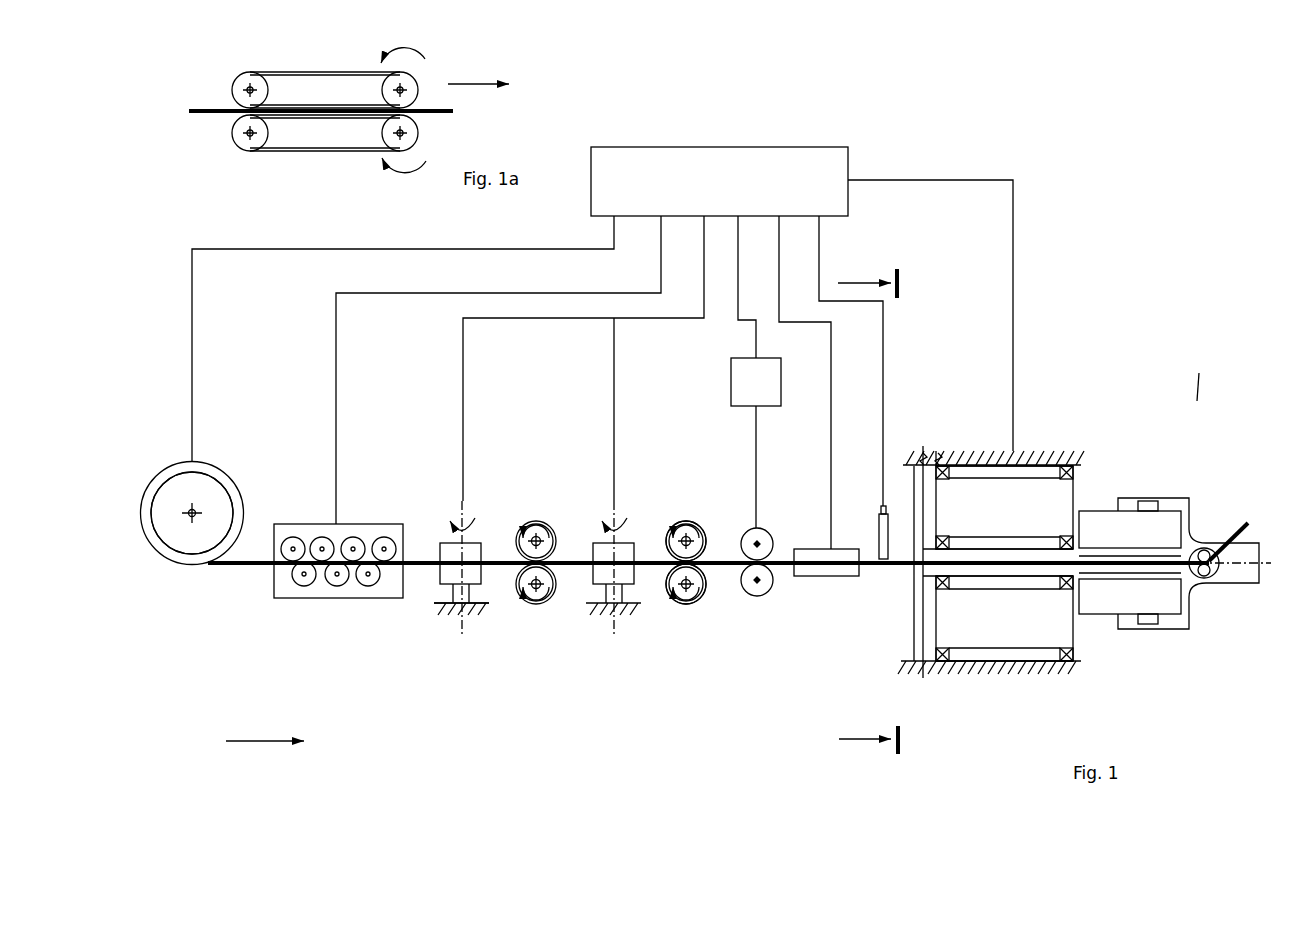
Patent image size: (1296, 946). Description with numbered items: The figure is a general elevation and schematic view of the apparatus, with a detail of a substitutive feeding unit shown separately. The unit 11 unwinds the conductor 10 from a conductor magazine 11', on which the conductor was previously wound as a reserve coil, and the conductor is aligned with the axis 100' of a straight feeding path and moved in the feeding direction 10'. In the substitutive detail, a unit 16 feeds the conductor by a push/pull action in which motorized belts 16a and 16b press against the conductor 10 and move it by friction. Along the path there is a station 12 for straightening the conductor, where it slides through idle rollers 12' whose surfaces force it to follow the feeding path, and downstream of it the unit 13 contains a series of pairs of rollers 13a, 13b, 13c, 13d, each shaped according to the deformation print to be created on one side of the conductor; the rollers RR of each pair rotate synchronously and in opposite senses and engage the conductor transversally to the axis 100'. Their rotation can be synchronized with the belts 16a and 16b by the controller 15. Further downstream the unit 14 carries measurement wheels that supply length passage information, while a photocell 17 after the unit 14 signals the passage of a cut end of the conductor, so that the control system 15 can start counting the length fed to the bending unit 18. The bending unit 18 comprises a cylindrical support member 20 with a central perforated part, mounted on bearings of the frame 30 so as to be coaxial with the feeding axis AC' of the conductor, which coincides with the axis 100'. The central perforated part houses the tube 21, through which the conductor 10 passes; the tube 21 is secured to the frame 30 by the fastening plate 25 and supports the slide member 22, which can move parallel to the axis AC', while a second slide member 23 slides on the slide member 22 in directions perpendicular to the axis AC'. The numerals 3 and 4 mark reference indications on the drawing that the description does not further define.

In FIG. 1, the winding station 3 is at (1167, 424).
In FIG. 1, the section line 4 is at (865, 283).
In FIG. 1A, the conductor 10 is at (320, 150).
In FIG. 1, the conductor 10 is at (728, 548).
In FIG. 1A, the feeding direction 10' is at (478, 61).
In FIG. 1, the feeding direction 10' is at (265, 719).
In FIG. 1, the axis of the feeding path 100' is at (423, 506).
In FIG. 1, the unwinding unit 11 is at (192, 468).
In FIG. 1, the conductor magazine 11' is at (209, 491).
In FIG. 1, the straightening station 12 is at (338, 616).
In FIG. 1, the idle rollers 12' is at (335, 601).
In FIG. 1, the roller unit 13 is at (544, 498).
In FIG. 1, the roller pair 13a is at (473, 577).
In FIG. 1, the roller pair 13b is at (535, 598).
In FIG. 1, the roller pair 13c is at (622, 573).
In FIG. 1, the roller pair 13d is at (704, 625).
In FIG. 1, the rotating rollers RR is at (685, 530).
In FIG. 1, the measurement unit 14 is at (769, 491).
In FIG. 1, the controller 15 is at (668, 158).
In FIG. 1, the feeding unit 16 is at (823, 615).
In FIG. 1A, the motorized belt 16a is at (322, 73).
In FIG. 1A, the motorized belt 16b is at (327, 148).
In FIG. 1, the photocell 17 is at (882, 523).
In FIG. 1, the bending unit 18 is at (1039, 435).
In FIG. 1, the support member 20 is at (1080, 480).
In FIG. 1, the tube 21 is at (982, 553).
In FIG. 1, the slide member 22 is at (1097, 520).
In FIG. 1, the second slide member 23 is at (1175, 622).
In FIG. 1, the fastening plate 25 is at (915, 485).
In FIG. 1, the frame 30 is at (972, 455).
In FIG. 1, the feeding axis AC' is at (1226, 598).